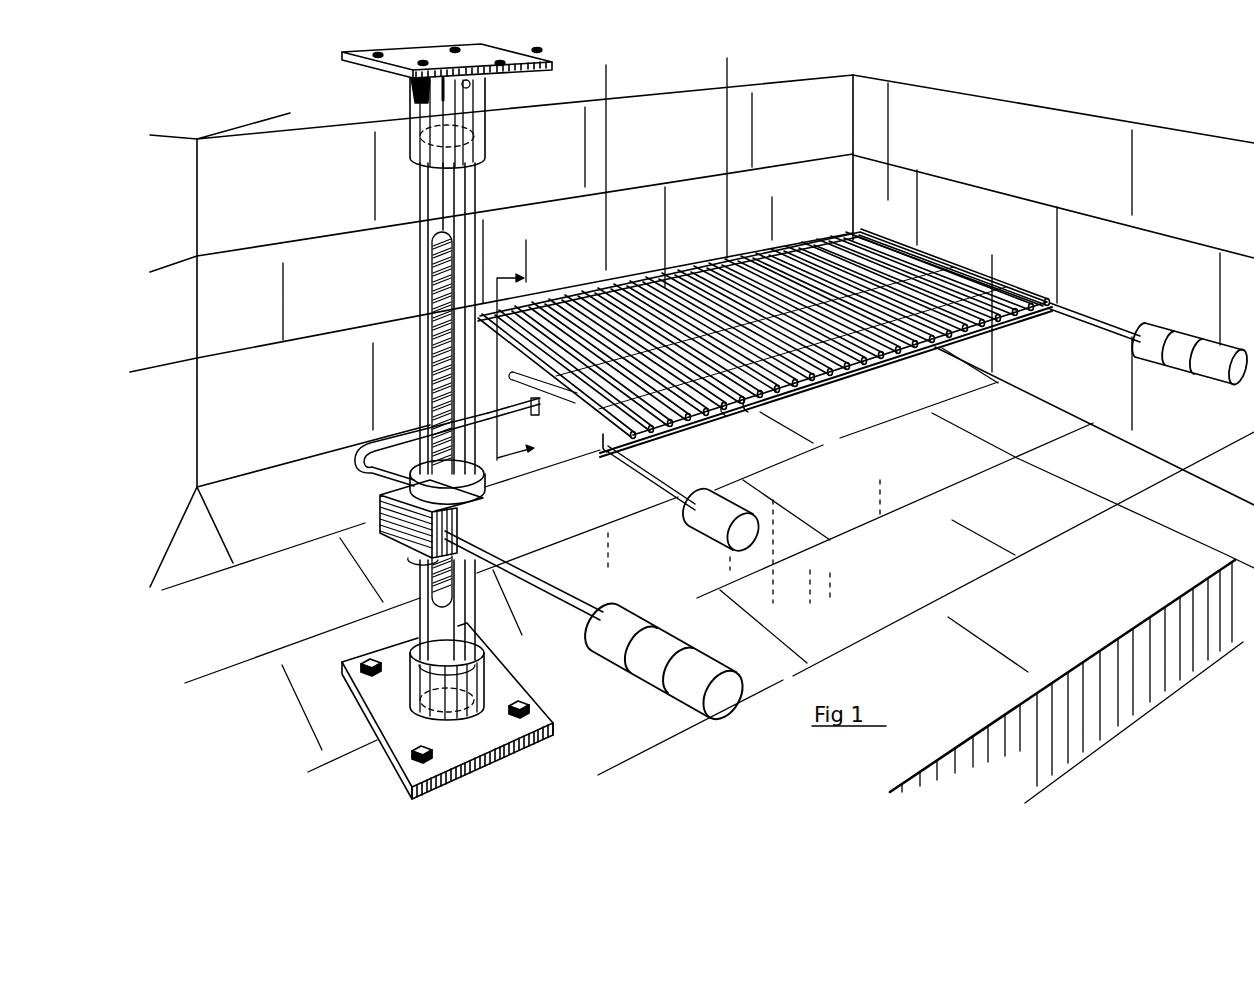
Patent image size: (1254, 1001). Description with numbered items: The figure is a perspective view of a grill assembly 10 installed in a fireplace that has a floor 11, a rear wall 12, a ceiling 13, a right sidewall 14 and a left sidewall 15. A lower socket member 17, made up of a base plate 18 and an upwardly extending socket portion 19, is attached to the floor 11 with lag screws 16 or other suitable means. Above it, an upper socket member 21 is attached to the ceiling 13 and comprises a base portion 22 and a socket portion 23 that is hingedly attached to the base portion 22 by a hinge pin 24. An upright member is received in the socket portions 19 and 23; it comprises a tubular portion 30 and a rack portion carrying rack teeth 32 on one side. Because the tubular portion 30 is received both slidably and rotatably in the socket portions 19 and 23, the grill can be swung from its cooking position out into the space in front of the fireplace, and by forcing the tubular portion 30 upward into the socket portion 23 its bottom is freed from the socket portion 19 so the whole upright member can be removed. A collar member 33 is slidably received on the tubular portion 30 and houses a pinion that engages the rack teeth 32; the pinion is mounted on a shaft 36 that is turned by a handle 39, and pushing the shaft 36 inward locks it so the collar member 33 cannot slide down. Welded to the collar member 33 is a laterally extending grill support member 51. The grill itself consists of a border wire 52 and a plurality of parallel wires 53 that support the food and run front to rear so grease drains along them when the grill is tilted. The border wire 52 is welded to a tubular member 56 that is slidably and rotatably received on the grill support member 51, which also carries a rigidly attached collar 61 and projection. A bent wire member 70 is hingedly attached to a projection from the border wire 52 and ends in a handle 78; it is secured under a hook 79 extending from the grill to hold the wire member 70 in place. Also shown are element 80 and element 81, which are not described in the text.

The grill assembly 10 is at (565, 247).
The floor 11 is at (1077, 657).
The rear wall 12 is at (785, 95).
The ceiling 13 is at (532, 350).
The right sidewall 14 is at (1212, 300).
The left sidewall 15 is at (162, 351).
The lag screws 16 is at (386, 660).
The lower socket member 17 is at (517, 663).
The base plate 18 is at (512, 689).
The socket portion 19 is at (418, 703).
The upper socket member 21 is at (519, 119).
The base portion 22 is at (392, 68).
The socket portion 23 is at (416, 134).
The hinge pin 24 is at (472, 84).
The tubular portion 30 is at (432, 206).
The rack teeth 32 is at (420, 346).
The collar member 33 is at (476, 505).
The shaft 36 is at (554, 590).
The handle 39 is at (662, 672).
The grill support member 51 is at (373, 472).
The border wire 52 is at (667, 434).
The parallel wires 53 is at (732, 416).
The tubular member 56 is at (580, 418).
The collar 61 is at (534, 405).
The wire member 70 is at (636, 470).
The handle 78 is at (714, 528).
The hook 79 is at (607, 447).
The weight 80 is at (1187, 346).
The rod 81 is at (1090, 318).